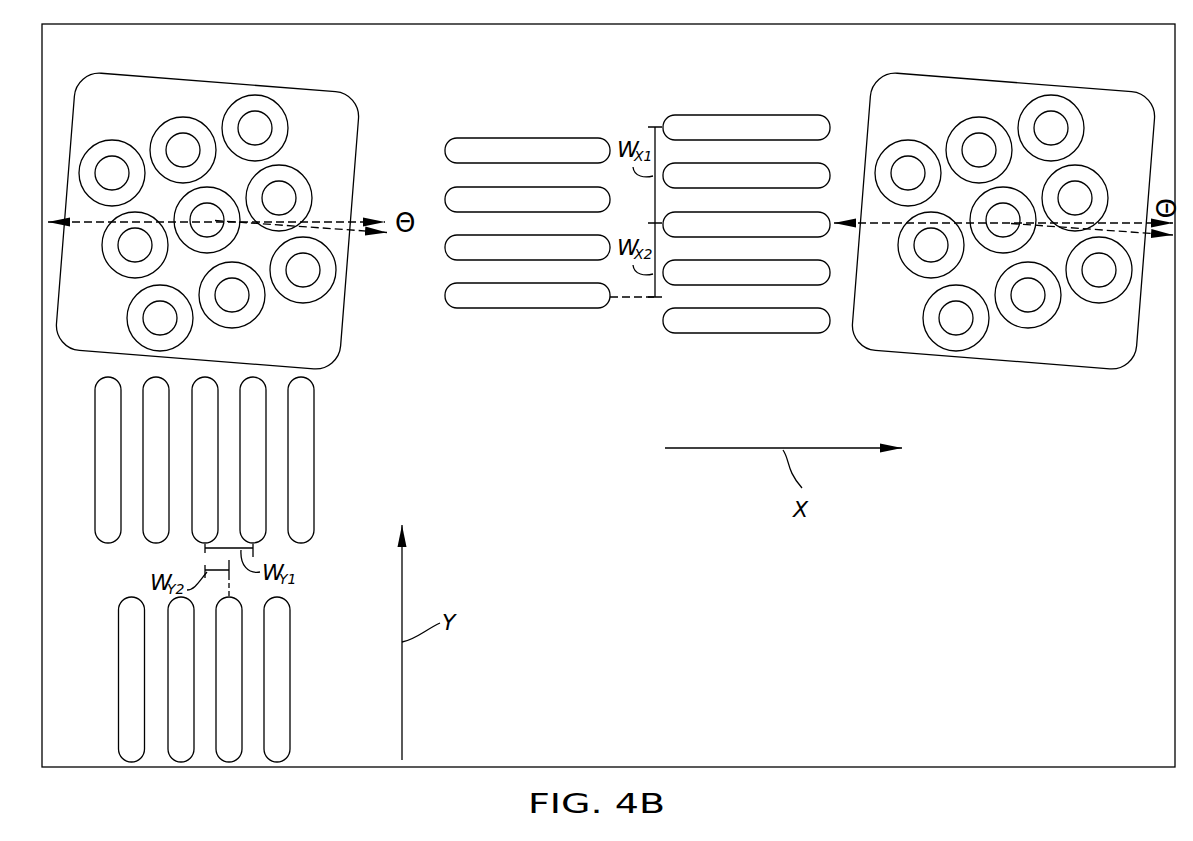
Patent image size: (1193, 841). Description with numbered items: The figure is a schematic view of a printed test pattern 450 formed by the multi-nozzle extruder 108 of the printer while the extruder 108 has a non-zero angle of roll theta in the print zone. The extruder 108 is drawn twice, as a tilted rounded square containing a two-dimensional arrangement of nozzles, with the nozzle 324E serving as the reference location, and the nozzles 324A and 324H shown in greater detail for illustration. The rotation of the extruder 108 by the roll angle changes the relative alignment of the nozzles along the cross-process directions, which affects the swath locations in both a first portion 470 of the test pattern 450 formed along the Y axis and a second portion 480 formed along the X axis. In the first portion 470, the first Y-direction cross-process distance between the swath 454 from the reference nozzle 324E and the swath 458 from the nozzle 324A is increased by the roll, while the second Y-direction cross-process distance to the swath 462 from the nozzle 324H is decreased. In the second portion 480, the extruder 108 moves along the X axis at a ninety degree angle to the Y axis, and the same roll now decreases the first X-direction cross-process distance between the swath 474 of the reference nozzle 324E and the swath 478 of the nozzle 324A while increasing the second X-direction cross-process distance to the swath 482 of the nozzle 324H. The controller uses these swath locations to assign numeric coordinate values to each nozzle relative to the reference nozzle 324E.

The test pattern 450 is at (42, 115).
The extruder 108 is at (363, 133).
The nozzle 324A is at (252, 96).
The reference nozzle 324E is at (238, 244).
The nozzle 324H is at (260, 308).
The swath 478 is at (692, 115).
The swath 474 is at (727, 213).
The swath 482 is at (445, 297).
The second portion of the test pattern 480 is at (601, 246).
The first portion of the test pattern 470 is at (194, 600).
The swath 454 is at (192, 540).
The swath 458 is at (265, 540).
The swath 462 is at (230, 762).